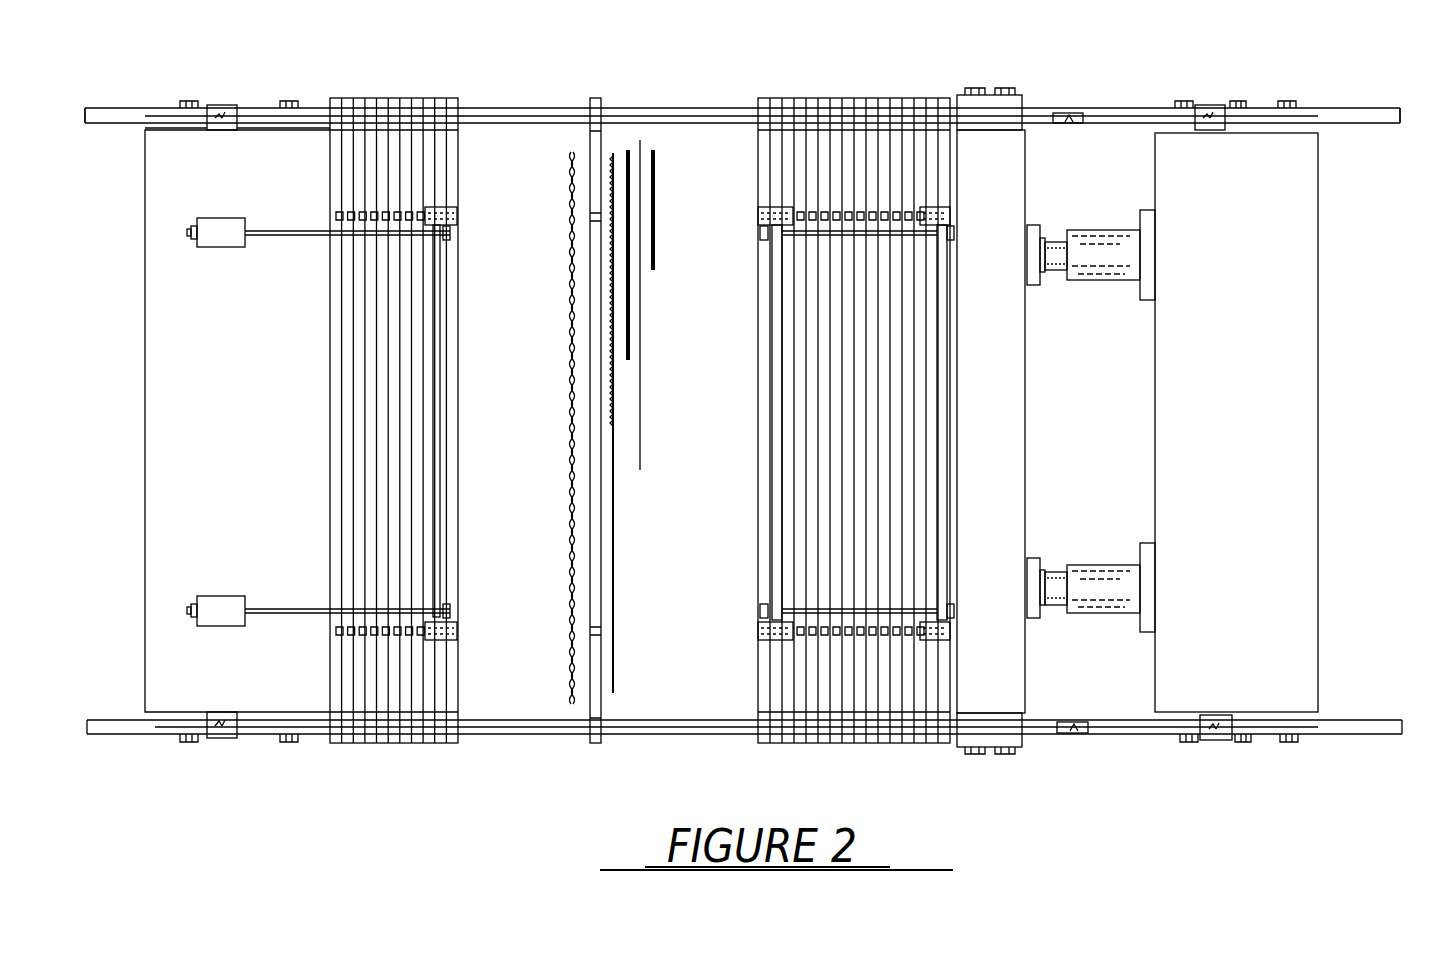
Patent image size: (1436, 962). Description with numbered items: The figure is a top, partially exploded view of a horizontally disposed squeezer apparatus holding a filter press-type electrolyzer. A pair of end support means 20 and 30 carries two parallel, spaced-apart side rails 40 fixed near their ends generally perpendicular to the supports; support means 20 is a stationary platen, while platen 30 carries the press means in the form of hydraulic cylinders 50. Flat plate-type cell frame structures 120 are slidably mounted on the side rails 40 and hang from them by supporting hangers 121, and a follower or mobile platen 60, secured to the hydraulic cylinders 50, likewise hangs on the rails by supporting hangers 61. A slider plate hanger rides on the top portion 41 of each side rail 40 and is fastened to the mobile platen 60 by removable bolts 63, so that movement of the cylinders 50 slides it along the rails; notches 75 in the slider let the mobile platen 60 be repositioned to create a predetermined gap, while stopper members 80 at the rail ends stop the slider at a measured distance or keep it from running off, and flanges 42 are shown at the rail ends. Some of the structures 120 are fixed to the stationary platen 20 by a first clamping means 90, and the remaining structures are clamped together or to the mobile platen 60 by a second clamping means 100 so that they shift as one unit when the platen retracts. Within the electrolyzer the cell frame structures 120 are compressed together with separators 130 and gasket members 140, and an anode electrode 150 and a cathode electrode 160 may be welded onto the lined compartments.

The support means 20 is at (192, 405).
The support means 30 is at (1290, 430).
The side rails 40 is at (120, 107).
The top portion 41 is at (1383, 122).
The rail flange 42 is at (150, 128).
The hydraulic cylinders 50 is at (1075, 283).
The mobile platen 60 is at (1030, 440).
The supporting hangers 61 is at (990, 96).
The bolts 63 is at (973, 90).
The notches 75 is at (1070, 112).
The stopper members 80 is at (222, 105).
The first clamping means 90 is at (255, 254).
The second clamping means 100 is at (878, 593).
The flat plate-type structures 120 is at (331, 94).
The supporting hangers 121 is at (385, 740).
The separators 130 is at (640, 142).
The gasket members 140 is at (654, 150).
The anode electrode 150 is at (614, 613).
The cathode electrode 160 is at (573, 152).